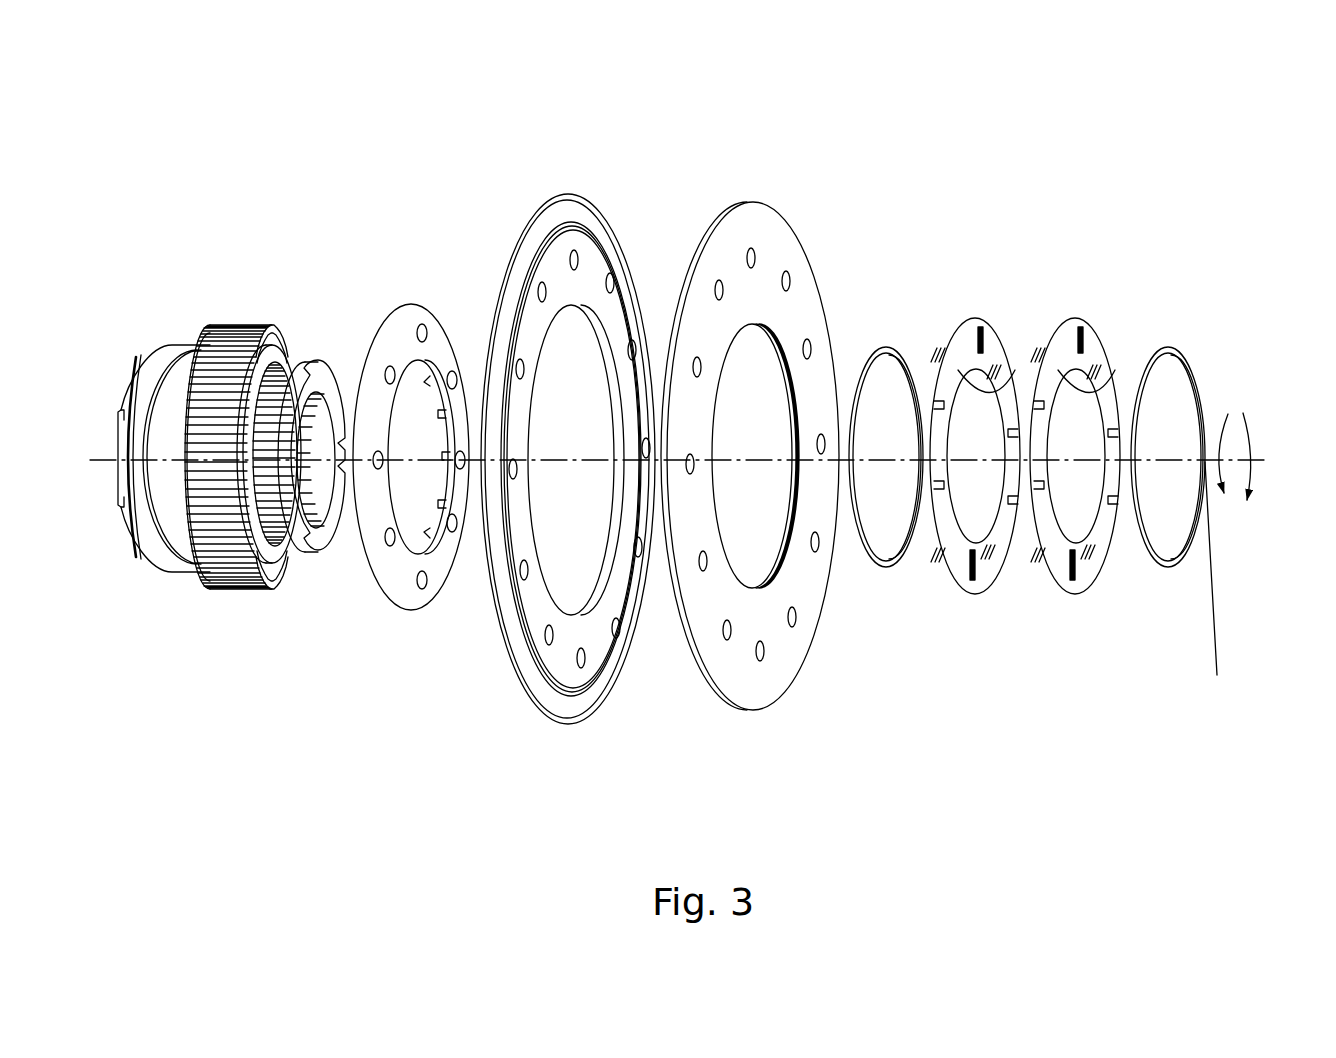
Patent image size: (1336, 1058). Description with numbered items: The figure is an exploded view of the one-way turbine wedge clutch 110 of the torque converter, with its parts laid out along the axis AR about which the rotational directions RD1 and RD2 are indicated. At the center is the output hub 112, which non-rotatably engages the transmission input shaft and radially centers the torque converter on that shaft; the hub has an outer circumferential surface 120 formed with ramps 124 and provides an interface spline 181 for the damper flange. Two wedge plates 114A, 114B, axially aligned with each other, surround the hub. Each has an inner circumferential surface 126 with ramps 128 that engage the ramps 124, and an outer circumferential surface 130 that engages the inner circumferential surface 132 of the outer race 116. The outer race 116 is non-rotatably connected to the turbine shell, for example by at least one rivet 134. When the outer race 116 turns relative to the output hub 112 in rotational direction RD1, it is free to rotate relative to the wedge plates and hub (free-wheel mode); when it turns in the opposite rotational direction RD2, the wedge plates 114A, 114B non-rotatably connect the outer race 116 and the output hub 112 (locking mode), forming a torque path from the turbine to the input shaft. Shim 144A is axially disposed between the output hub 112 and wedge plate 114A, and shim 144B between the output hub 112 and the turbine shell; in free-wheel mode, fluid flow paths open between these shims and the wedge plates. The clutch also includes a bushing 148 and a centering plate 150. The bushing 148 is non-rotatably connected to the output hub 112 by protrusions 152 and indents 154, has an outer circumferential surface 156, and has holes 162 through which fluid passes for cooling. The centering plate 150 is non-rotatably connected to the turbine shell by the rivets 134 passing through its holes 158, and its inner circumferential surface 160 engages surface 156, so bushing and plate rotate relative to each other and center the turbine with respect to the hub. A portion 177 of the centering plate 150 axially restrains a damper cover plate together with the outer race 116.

The one-way turbine wedge clutch 110 is at (1180, 237).
The output hub 112 is at (229, 473).
The wedge plate 114A is at (963, 320).
The wedge plate 114B is at (1062, 320).
The outer race 116 is at (765, 417).
The outer circumferential surface 120 is at (308, 553).
The ramps 124 is at (298, 352).
The inner circumferential surface 126 is at (1018, 360).
The ramps 128 is at (935, 377).
The outer circumferential surface 130 is at (973, 590).
The inner circumferential surface 132 is at (740, 351).
The rivet 134 is at (752, 568).
The shim 144A is at (885, 557).
The shim 144B is at (1163, 557).
The bushing 148 is at (394, 417).
The centering plate 150 is at (579, 460).
The protrusions 152 is at (423, 547).
The indents 154 is at (248, 580).
The outer circumferential surface 156 is at (382, 578).
The holes 158 is at (573, 653).
The inner circumferential surface 160 is at (598, 588).
The holes 162 is at (420, 330).
The portion 177 is at (535, 683).
The interface spline 181 is at (257, 327).
The axis of rotation AR is at (1218, 588).
The rotational direction RD1 is at (1250, 433).
The rotational direction RD2 is at (1222, 430).